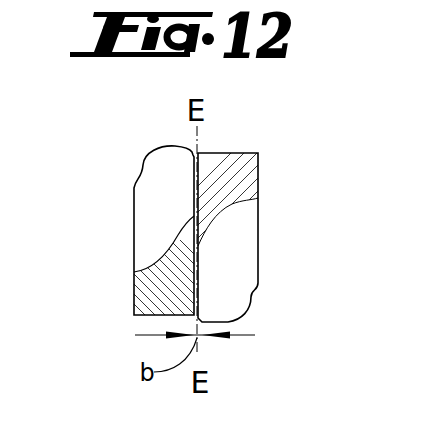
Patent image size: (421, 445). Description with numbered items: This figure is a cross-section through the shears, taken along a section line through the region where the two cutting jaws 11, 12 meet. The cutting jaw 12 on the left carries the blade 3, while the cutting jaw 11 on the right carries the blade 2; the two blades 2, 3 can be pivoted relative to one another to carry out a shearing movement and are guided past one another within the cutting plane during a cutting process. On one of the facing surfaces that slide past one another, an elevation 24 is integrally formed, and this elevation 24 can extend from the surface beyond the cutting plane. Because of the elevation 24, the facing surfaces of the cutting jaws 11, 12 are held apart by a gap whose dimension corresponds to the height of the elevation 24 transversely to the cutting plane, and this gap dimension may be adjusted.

The cutting jaw 12 is at (148, 189).
The blade 3 is at (190, 307).
The cutting jaw 11 is at (260, 262).
The blade 2 is at (197, 236).
The elevation 24 is at (197, 180).